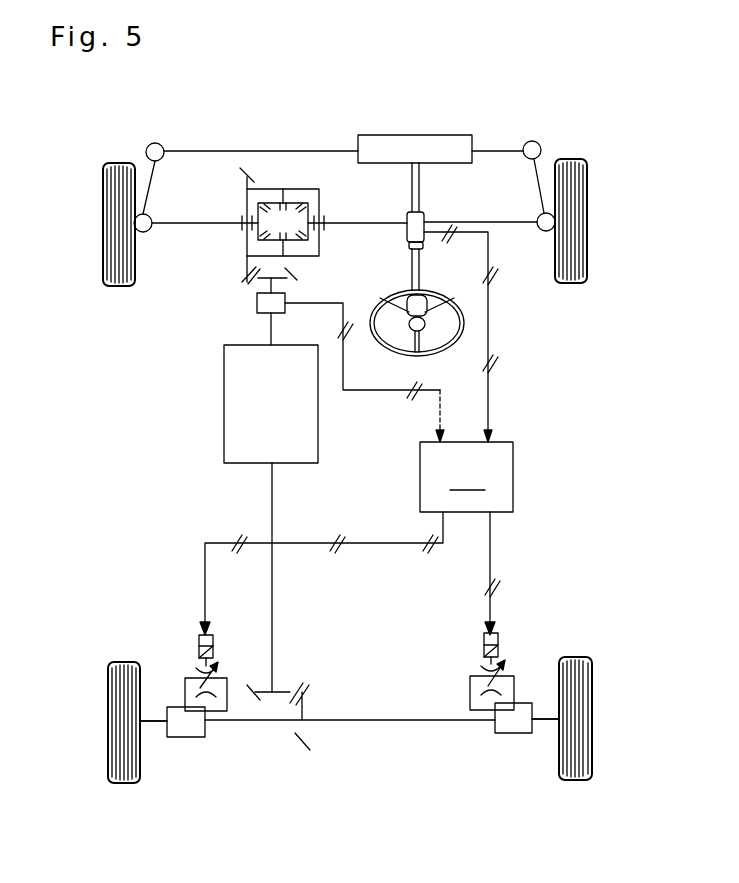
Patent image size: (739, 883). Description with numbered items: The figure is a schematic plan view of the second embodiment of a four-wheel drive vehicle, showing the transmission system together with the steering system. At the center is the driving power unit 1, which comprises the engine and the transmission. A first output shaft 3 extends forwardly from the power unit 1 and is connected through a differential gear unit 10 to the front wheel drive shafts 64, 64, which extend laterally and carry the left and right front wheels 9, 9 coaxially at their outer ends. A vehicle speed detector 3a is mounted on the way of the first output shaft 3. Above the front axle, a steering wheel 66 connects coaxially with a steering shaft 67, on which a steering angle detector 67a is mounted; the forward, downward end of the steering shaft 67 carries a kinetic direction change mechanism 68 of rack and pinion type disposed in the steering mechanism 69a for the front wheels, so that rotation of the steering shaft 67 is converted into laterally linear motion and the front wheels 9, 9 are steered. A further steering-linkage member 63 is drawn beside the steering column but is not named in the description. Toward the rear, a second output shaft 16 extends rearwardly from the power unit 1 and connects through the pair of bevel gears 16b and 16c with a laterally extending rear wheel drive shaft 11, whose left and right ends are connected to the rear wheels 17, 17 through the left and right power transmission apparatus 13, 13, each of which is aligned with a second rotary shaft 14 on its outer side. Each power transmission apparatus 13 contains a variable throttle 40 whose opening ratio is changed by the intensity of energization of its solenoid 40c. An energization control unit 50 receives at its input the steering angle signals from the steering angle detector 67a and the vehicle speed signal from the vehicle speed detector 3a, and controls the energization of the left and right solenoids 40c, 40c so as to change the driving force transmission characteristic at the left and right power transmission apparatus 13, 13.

The driving power unit 1 is at (224, 403).
The first output shaft 3 is at (270, 330).
The vehicle speed detector 3a is at (257, 303).
The front wheel 9 is at (102, 219).
The differential gear unit 10 is at (290, 189).
The rear wheel drive shaft 11 is at (402, 722).
The power transmission apparatus 13 is at (187, 737).
The second rotary shaft 14 is at (153, 723).
The second output shaft 16 is at (272, 500).
The bevel gear 16b is at (290, 692).
The bevel gear 16c is at (307, 731).
The rear wheel 17 is at (103, 722).
The variable throttle 40 is at (176, 668).
The solenoid 40c is at (213, 647).
The energization control unit 50 is at (466, 477).
The tie rod 63 is at (496, 222).
The front wheel drive shaft 64 is at (190, 222).
The steering wheel 66 is at (463, 330).
The steering shaft 67 is at (423, 274).
The steering angle detector 67a is at (430, 217).
The kinetic direction change mechanism 68 is at (410, 135).
The steering mechanism 69a is at (323, 132).